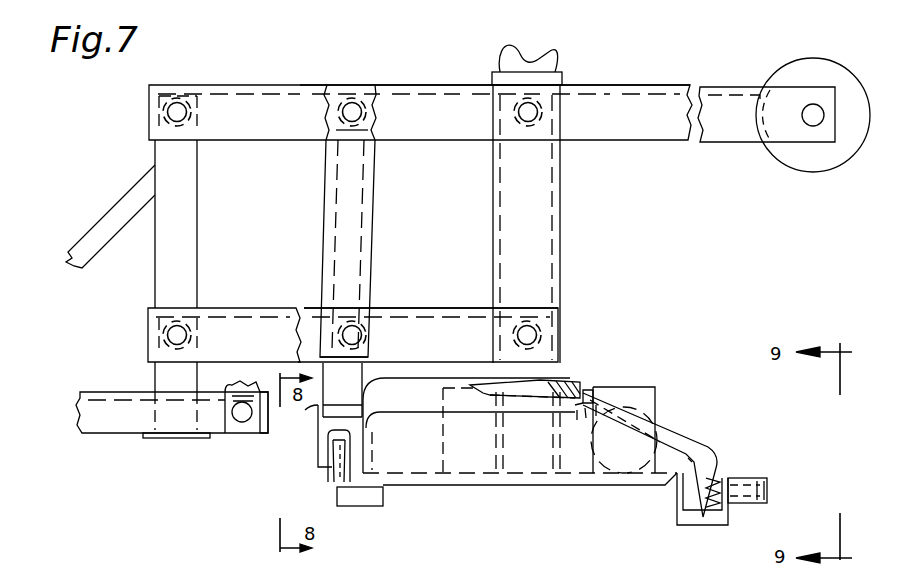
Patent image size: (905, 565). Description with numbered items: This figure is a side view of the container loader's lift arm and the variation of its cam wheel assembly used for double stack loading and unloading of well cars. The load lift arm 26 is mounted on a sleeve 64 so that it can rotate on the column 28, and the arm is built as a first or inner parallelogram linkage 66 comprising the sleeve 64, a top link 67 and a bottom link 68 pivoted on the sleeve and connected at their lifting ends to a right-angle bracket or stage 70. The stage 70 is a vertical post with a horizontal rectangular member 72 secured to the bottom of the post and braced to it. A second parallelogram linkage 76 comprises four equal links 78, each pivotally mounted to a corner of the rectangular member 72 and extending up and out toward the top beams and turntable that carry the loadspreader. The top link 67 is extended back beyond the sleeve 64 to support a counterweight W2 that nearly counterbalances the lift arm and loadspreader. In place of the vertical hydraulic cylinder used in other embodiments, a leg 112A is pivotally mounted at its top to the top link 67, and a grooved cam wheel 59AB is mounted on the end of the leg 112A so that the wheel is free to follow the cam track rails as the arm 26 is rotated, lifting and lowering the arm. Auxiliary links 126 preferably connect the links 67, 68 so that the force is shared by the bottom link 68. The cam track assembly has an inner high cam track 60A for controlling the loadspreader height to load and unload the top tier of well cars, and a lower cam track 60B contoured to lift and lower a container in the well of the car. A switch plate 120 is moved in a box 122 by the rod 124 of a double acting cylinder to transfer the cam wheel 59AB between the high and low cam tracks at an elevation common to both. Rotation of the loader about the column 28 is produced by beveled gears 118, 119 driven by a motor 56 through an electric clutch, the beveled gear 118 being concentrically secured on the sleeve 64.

The load lift arm 26 is at (453, 92).
The column 28 is at (548, 62).
The motor 56 is at (655, 389).
The grooved cam wheel 59AB is at (337, 480).
The inner high cam track 60A is at (318, 408).
The lower cam track 60B is at (687, 440).
The sleeve 64 is at (563, 250).
The first parallelogram linkage 66 is at (270, 128).
The top link 67 is at (656, 145).
The bottom link 68 is at (463, 304).
The right-angle bracket or stage 70 is at (155, 152).
The horizontal rectangular member 72 is at (118, 428).
The second parallelogram linkage 76 is at (141, 465).
The links 78 is at (223, 418).
The leg 112A is at (377, 170).
The beveled gear 118 is at (573, 382).
The beveled gear 119 is at (585, 393).
The switch plate 120 is at (717, 470).
The box 122 is at (728, 520).
The rod 124 is at (767, 493).
The auxiliary links 126 is at (372, 213).
The counterweight W2 is at (792, 172).